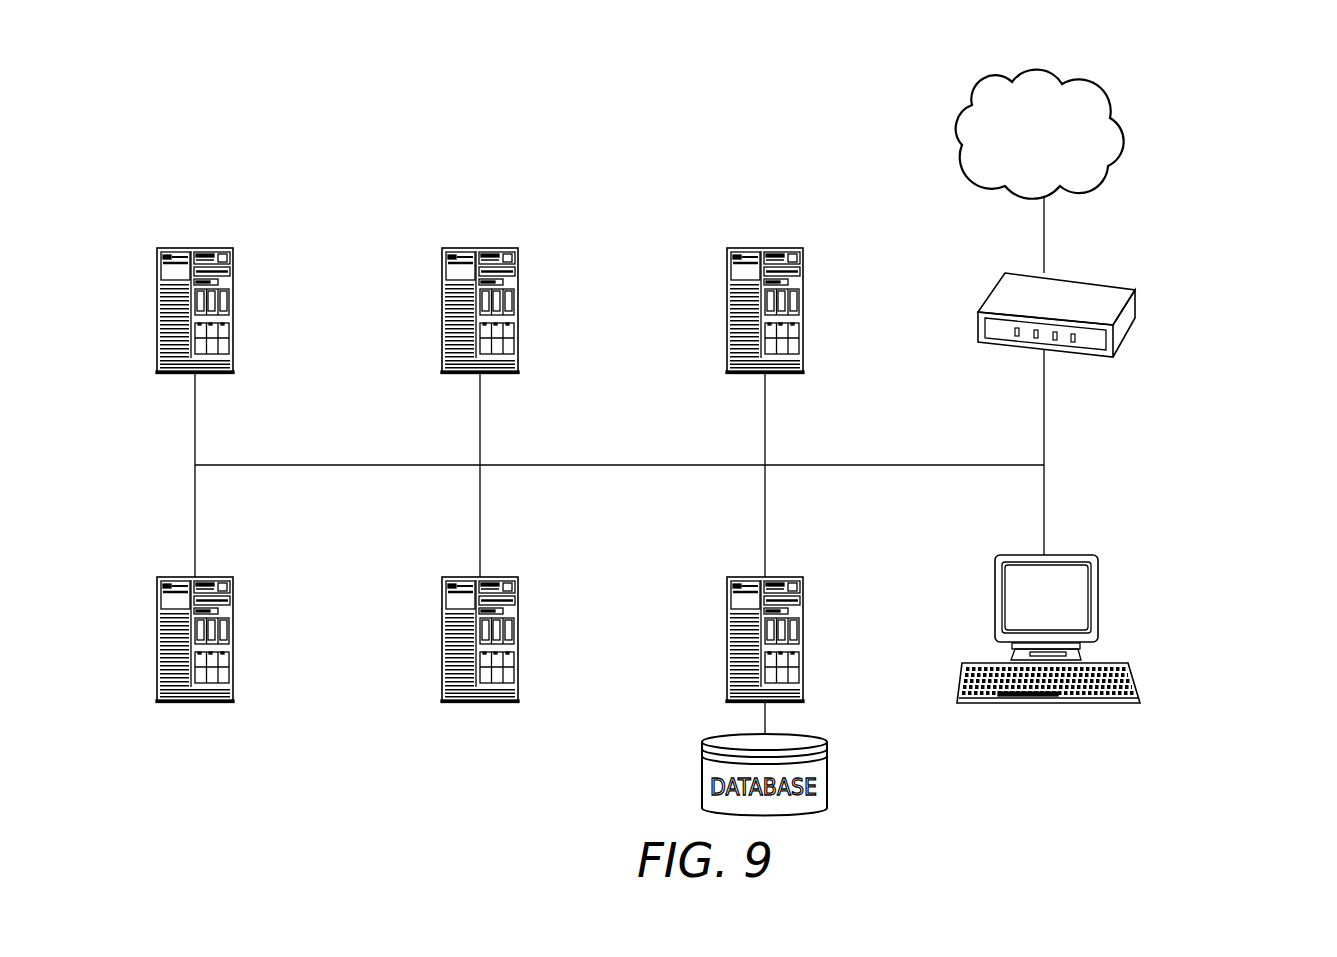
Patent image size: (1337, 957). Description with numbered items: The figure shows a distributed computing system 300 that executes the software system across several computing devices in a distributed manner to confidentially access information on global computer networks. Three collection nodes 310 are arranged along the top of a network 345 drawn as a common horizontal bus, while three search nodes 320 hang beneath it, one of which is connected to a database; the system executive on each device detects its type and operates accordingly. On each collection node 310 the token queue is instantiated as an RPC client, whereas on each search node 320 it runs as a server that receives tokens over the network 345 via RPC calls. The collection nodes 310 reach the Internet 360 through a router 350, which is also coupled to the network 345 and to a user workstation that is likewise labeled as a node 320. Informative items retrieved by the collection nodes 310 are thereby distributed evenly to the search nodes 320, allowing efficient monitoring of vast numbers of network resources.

The distributed computing system 300 is at (1252, 112).
The collection node 310 is at (196, 247).
The search node 320 is at (214, 577).
The network 345 is at (622, 464).
The router 350 is at (1110, 283).
The Internet 360 is at (1078, 79).